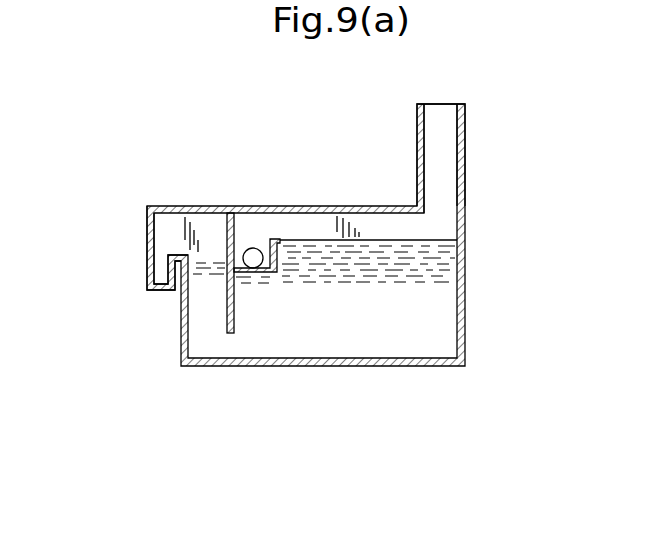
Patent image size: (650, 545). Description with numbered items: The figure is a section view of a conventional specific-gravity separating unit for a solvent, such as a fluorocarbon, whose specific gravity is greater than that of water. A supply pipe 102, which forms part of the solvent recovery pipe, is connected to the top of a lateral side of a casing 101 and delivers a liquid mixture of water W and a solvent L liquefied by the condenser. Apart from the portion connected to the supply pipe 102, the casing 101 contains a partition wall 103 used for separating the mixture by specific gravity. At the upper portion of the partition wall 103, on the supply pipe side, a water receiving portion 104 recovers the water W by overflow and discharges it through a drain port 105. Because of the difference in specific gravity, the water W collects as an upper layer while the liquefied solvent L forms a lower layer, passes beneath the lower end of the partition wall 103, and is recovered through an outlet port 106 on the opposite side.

The casing 101 is at (467, 320).
The supply pipe 102 is at (467, 142).
The partition wall 103 is at (228, 237).
The water receiving portion 104 is at (258, 235).
The drain port 105 is at (252, 248).
The outlet port 106 is at (147, 268).
The water W is at (377, 237).
The solvent L is at (317, 343).